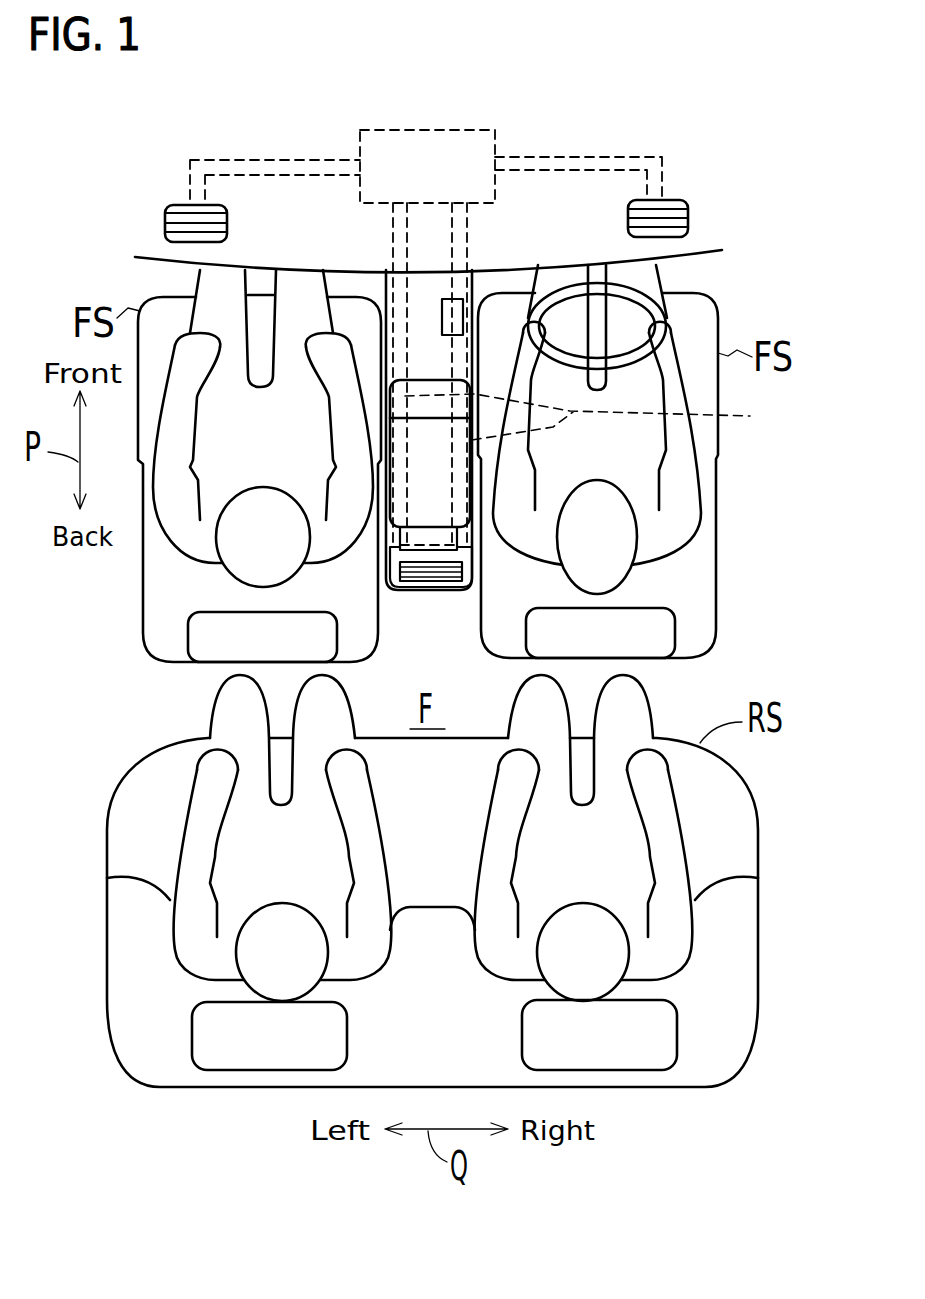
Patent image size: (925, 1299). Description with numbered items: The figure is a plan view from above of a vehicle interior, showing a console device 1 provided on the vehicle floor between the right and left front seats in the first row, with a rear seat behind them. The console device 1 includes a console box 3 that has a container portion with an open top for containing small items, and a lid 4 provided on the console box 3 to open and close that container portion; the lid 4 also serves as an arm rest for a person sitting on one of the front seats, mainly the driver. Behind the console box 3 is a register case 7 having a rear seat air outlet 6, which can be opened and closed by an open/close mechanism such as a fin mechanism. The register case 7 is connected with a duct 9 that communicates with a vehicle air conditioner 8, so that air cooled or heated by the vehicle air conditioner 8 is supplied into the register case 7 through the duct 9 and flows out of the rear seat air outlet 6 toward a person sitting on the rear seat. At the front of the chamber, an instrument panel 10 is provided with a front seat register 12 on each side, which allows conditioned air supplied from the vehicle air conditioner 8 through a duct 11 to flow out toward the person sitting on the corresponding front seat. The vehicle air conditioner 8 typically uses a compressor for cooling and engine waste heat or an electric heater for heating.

The console device 1 is at (488, 492).
The console box 3 is at (488, 532).
The lid 4 is at (425, 497).
The rear seat air outlet 6 is at (437, 571).
The register case 7 is at (462, 564).
The vehicle air conditioner 8 is at (417, 128).
The duct 9 is at (589, 416).
The instrument panel 10 is at (695, 260).
The duct 11 is at (272, 160).
The front seat register 12 is at (176, 214).